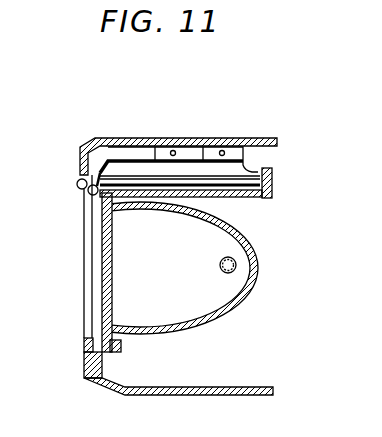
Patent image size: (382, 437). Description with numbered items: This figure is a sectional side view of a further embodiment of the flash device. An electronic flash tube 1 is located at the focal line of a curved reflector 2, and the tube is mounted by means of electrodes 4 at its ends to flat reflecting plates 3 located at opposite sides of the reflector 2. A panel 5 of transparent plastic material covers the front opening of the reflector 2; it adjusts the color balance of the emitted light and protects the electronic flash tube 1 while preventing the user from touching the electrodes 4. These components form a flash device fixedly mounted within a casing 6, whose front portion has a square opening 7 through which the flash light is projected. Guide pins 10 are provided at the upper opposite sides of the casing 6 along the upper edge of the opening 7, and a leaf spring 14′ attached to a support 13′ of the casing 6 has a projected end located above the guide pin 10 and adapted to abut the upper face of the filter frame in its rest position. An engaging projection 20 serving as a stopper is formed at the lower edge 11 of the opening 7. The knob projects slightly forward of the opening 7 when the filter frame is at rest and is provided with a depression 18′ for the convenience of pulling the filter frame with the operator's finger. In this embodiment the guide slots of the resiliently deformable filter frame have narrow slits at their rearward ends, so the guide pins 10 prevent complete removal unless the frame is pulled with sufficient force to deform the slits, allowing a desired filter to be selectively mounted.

The leaf spring 14′ is at (132, 167).
The support 13′ is at (180, 150).
The depression 18′ is at (78, 181).
The guide pin 10 is at (89, 195).
The square opening 7 is at (68, 248).
The panel 5 is at (104, 279).
The curved reflector 2 is at (246, 241).
The electronic flash tube 1 is at (234, 264).
The electrode 4 is at (232, 289).
The flat reflecting plate 3 is at (185, 318).
The engaging projection 20 is at (82, 336).
The lower edge 11 is at (83, 352).
The casing 6 is at (83, 375).